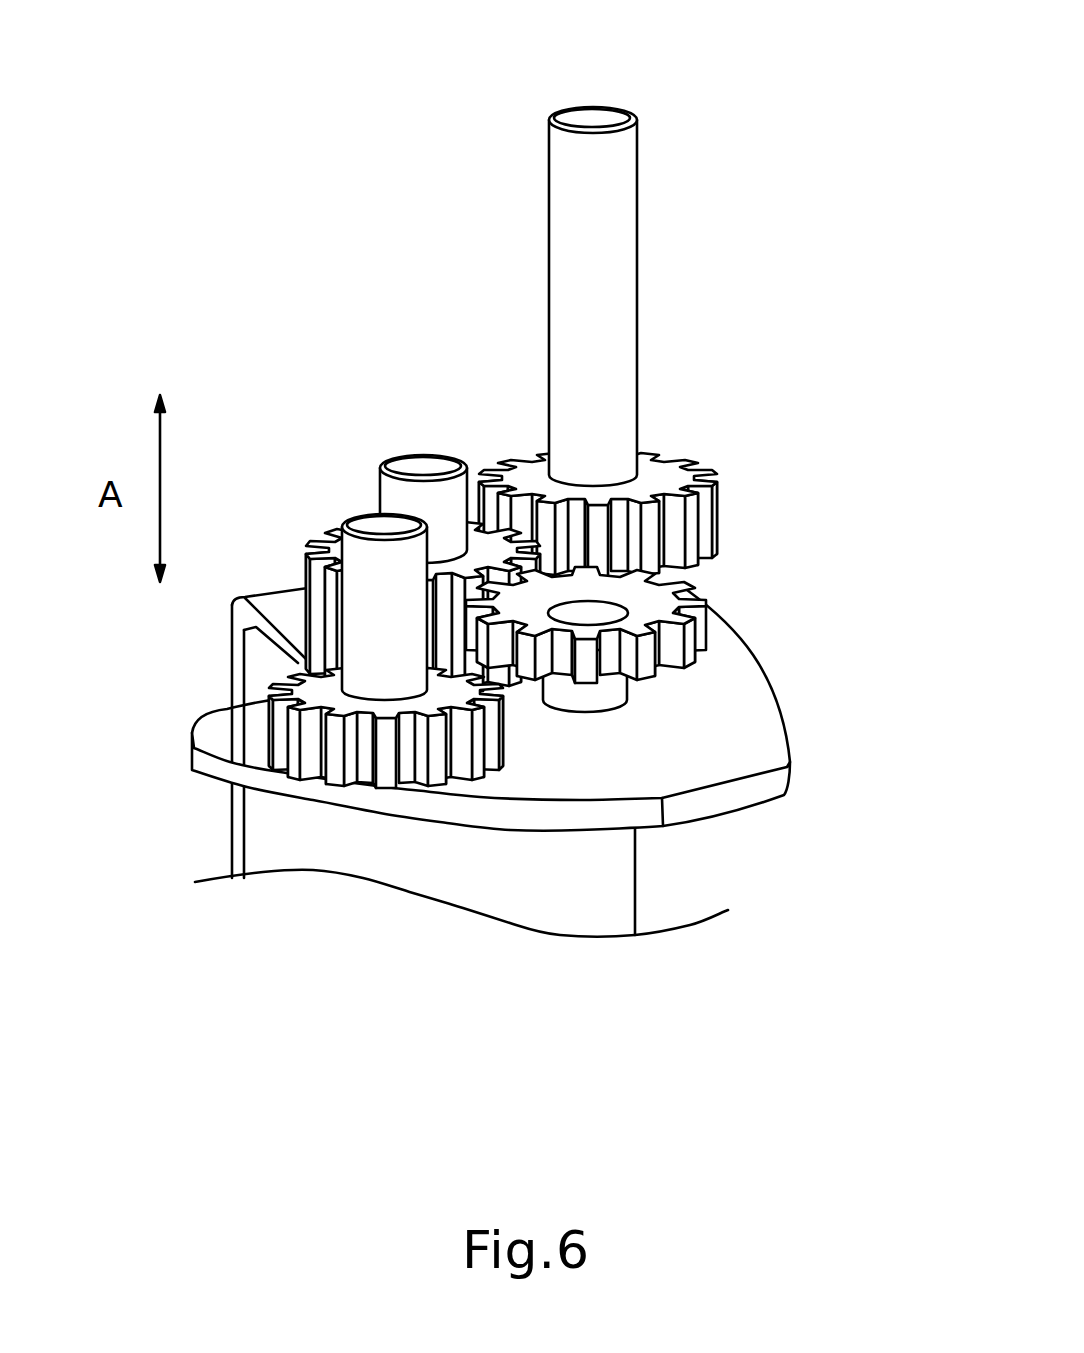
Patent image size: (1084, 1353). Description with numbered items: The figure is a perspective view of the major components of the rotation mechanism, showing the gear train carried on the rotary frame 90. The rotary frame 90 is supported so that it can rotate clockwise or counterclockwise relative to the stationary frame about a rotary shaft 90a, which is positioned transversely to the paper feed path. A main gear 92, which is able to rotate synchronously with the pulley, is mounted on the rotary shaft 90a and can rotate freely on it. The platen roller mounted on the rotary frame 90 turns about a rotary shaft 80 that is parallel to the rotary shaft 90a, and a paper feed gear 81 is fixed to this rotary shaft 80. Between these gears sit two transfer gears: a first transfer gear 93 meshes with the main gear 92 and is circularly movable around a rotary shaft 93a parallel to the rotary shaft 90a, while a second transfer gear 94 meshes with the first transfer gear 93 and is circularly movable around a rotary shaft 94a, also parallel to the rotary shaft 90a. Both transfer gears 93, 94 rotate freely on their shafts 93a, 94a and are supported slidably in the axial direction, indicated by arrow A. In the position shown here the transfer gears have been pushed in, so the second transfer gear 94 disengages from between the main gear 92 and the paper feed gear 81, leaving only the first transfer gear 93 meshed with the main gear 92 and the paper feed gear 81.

The rotary shaft 80 is at (598, 612).
The paper feed gear 81 is at (658, 653).
The rotary frame 90 is at (743, 717).
The rotary shaft 90a is at (597, 118).
The main gear 92 is at (663, 468).
The first transfer gear 93 is at (318, 546).
The rotary shaft 93a is at (423, 470).
The second transfer gear 94 is at (315, 690).
The rotary shaft 94a is at (373, 522).